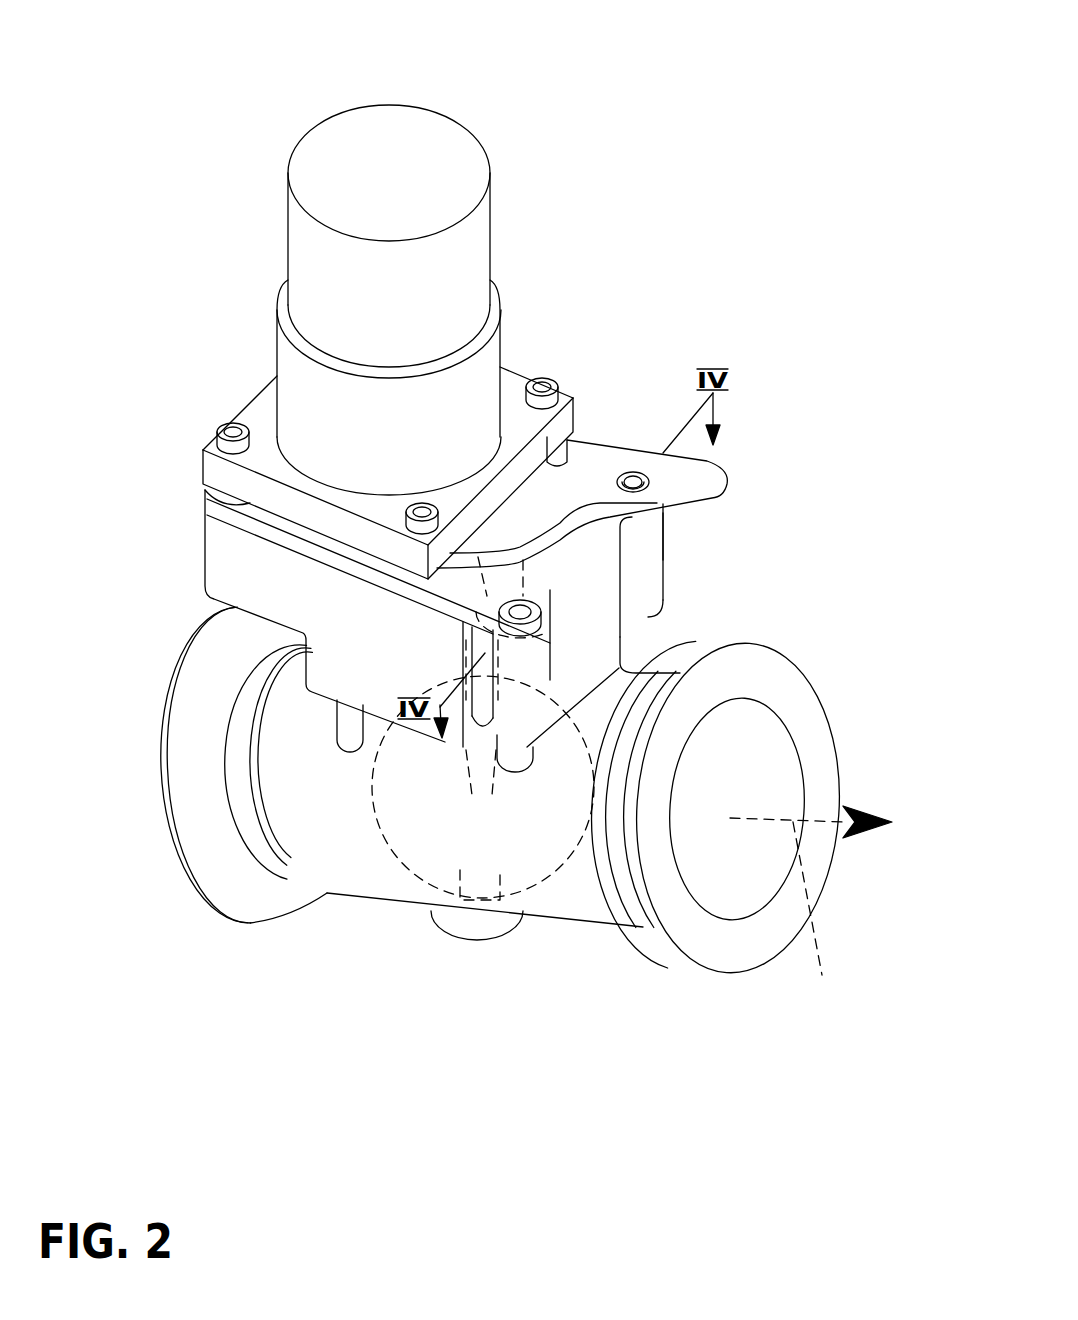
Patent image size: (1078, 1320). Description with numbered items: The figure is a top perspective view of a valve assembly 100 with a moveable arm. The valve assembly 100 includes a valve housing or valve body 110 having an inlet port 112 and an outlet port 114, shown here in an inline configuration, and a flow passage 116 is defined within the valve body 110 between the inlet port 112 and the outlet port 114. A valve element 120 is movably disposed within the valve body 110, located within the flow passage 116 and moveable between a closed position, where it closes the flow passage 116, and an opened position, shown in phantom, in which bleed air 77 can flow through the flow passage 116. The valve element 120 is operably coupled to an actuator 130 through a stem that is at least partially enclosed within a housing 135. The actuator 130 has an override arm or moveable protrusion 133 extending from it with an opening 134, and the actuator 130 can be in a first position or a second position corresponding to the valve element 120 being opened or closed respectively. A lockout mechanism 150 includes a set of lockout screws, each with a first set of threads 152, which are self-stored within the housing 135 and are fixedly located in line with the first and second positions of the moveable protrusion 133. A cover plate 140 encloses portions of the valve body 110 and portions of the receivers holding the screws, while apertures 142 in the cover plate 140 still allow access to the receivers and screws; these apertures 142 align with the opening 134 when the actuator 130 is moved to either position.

The valve assembly 100 is at (230, 97).
The valve body 110 is at (531, 834).
The inlet port 112 is at (192, 653).
The outlet port 114 is at (800, 752).
The flow passage 116 is at (742, 793).
The valve element 120 is at (425, 875).
The actuator 130 is at (647, 466).
The moveable protrusion 133 is at (727, 463).
The opening 134 is at (637, 470).
The housing 135 is at (222, 582).
The cover plate 140 is at (593, 450).
The apertures 142 is at (553, 614).
The lockout mechanism 150 is at (655, 506).
The first set of threads 152 is at (650, 480).
The bleed air 77 is at (816, 919).